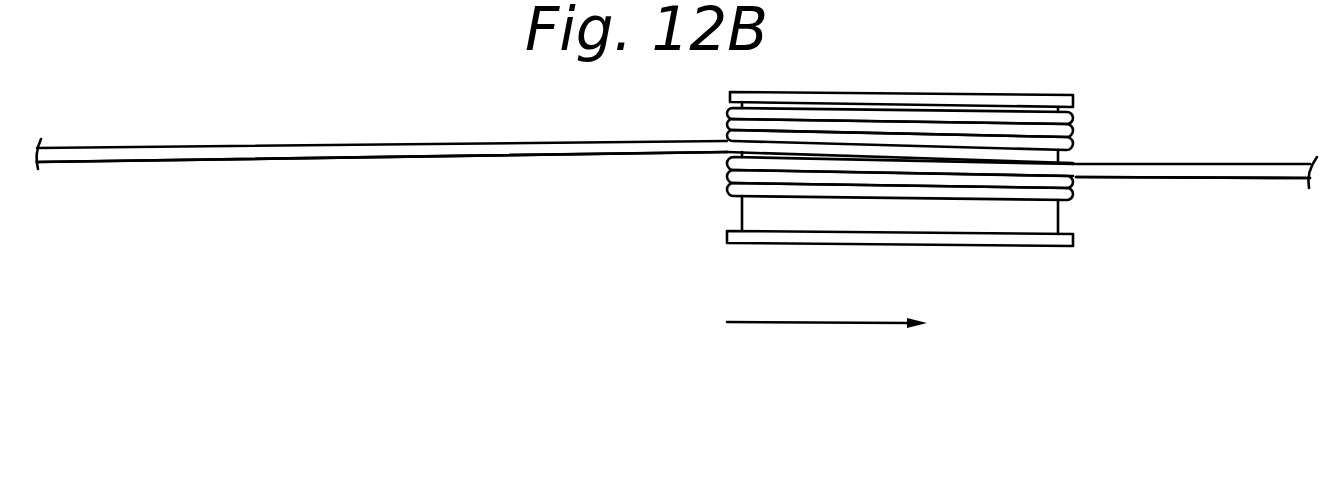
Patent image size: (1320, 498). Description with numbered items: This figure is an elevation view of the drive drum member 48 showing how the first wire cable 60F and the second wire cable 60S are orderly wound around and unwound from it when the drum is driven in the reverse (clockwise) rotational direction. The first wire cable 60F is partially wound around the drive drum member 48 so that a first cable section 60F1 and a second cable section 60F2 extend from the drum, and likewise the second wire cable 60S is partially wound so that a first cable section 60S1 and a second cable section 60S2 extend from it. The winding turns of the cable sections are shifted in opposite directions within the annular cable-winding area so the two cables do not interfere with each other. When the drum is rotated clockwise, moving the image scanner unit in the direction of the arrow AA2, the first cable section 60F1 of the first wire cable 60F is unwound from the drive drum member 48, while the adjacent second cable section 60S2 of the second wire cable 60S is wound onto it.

The drive drum member 48 is at (940, 79).
The first wire cable 60F is at (382, 132).
The first cable section of the first wire cable 60F1 is at (418, 158).
The second cable section of the first wire cable 60F2 is at (1073, 121).
The second wire cable 60S is at (1265, 150).
The first cable section of the second wire cable 60S1 is at (727, 186).
The second cable section of the second wire cable 60S2 is at (1163, 180).
The direction arrow AA2 is at (823, 324).